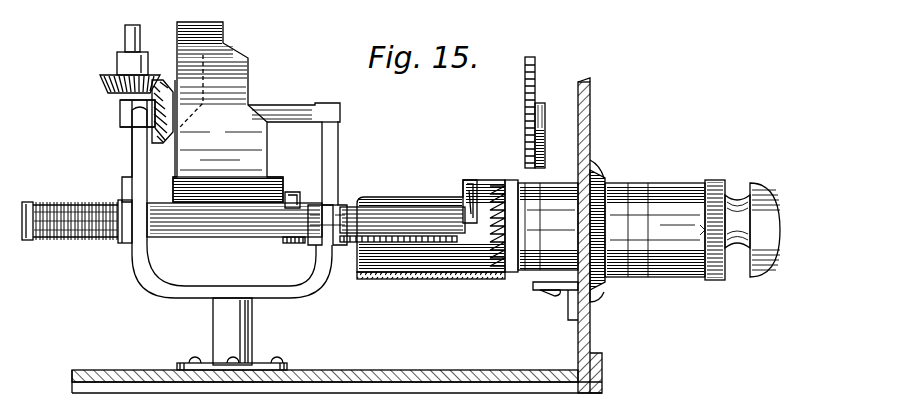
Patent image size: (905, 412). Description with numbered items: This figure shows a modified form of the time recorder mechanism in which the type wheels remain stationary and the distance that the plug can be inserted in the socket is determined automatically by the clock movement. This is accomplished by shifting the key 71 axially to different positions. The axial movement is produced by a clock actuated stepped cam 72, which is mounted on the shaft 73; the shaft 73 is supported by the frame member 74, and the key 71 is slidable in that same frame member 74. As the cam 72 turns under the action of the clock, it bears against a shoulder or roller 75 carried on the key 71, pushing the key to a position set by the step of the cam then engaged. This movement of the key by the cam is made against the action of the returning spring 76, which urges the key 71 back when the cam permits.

The key 71 is at (228, 233).
The clock actuated stepped cam 72 is at (228, 112).
The shaft 73 is at (275, 114).
The frame member 74 is at (253, 318).
The shoulder or roller 75 is at (303, 196).
The returning spring 76 is at (58, 232).